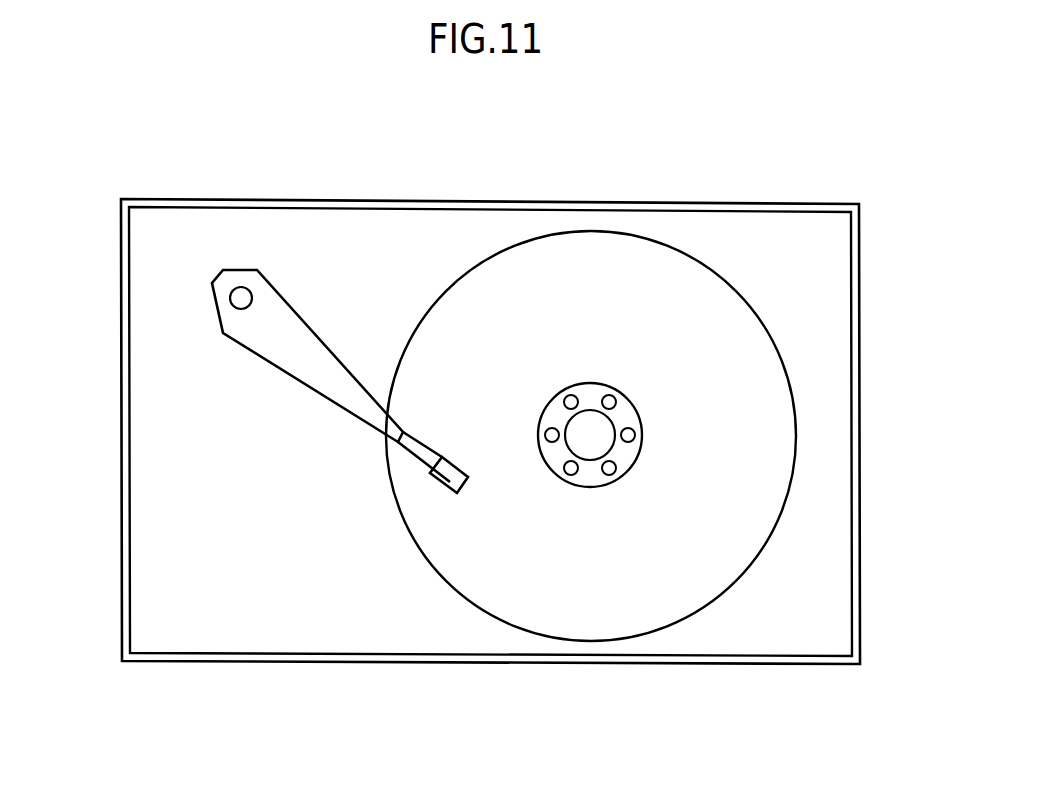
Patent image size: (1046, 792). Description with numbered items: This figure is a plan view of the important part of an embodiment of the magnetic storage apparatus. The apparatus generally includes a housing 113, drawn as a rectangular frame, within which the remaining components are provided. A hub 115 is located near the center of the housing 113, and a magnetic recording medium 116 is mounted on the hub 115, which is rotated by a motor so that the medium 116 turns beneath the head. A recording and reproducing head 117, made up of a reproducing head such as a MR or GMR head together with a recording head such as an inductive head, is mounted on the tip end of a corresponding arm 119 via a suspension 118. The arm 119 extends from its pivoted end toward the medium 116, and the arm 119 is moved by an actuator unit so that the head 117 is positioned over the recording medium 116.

The housing 113 is at (822, 664).
The hub 115 is at (597, 422).
The magnetic recording medium 116 is at (635, 247).
The recording and reproducing head 117 is at (463, 467).
The suspension 118 is at (420, 440).
The arm 119 is at (297, 373).